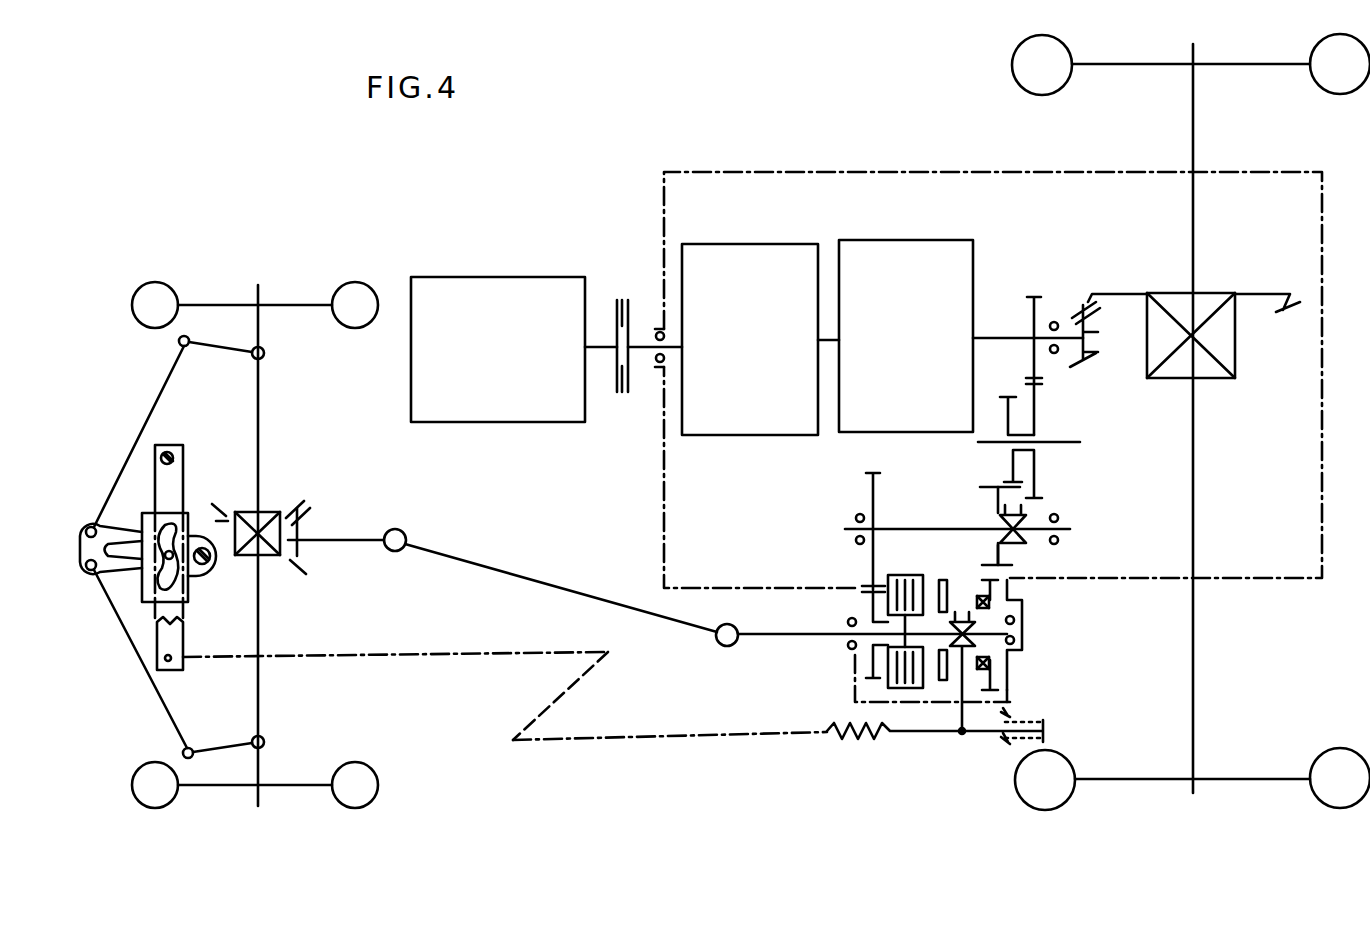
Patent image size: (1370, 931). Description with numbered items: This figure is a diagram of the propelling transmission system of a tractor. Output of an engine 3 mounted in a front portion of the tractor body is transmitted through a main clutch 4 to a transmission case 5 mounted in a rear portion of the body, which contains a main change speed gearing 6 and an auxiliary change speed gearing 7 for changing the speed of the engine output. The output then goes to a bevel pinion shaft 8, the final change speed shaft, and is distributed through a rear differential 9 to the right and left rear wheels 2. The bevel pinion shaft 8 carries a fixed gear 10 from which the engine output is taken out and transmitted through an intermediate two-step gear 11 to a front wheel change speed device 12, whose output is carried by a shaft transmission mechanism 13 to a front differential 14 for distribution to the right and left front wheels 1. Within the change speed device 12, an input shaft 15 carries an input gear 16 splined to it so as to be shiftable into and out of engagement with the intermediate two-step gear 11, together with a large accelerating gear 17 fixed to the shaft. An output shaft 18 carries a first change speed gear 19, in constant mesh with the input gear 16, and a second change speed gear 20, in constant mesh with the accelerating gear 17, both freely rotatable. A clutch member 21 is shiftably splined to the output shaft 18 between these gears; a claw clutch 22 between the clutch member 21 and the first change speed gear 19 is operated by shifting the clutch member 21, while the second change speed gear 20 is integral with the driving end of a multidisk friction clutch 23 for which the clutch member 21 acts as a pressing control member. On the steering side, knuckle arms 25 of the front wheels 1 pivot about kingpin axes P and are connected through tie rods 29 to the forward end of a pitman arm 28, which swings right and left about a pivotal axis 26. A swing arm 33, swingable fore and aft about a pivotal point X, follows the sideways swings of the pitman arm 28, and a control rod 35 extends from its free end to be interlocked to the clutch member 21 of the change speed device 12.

The front wheels 1 is at (157, 282).
The rear wheels 2 is at (1012, 70).
The engine 3 is at (468, 277).
The main clutch 4 is at (620, 292).
The transmission case 5 is at (866, 168).
The main change speed gearing 6 is at (758, 244).
The auxiliary change speed gearing 7 is at (880, 240).
The bevel pinion shaft 8 is at (1006, 336).
The rear differential 9 is at (1238, 338).
The gear 10 is at (1036, 296).
The intermediate two-step gear 11 is at (1036, 422).
The front wheel change speed device 12 is at (826, 539).
The shaft transmission mechanism 13 is at (540, 578).
The front differential 14 is at (266, 512).
The input shaft 15 is at (966, 522).
The input gear 16 is at (1012, 563).
The accelerating gear 17 is at (870, 490).
The output shaft 18 is at (822, 640).
The first change speed gear 19 is at (1010, 590).
The second change speed gear 20 is at (860, 606).
The clutch member 21 is at (940, 578).
The claw clutch 22 is at (980, 672).
The friction clutch 23 is at (915, 692).
The knuckle arms 25 is at (214, 345).
The pivotal axis 26 is at (210, 565).
The pitman arm 28 is at (84, 528).
The tie rods 29 is at (152, 410).
The swing arm 33 is at (157, 640).
The control rod 35 is at (218, 660).
The kingpin axes P is at (265, 352).
The pivotal point X is at (170, 452).